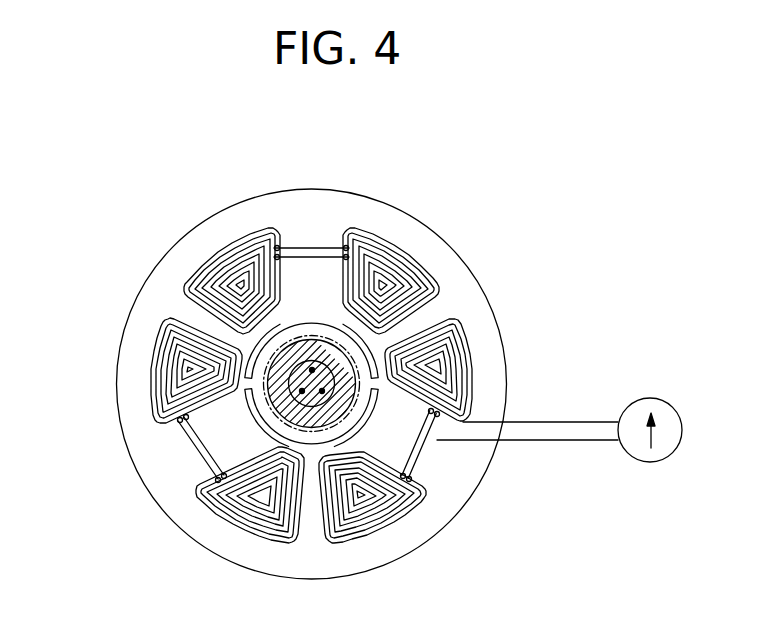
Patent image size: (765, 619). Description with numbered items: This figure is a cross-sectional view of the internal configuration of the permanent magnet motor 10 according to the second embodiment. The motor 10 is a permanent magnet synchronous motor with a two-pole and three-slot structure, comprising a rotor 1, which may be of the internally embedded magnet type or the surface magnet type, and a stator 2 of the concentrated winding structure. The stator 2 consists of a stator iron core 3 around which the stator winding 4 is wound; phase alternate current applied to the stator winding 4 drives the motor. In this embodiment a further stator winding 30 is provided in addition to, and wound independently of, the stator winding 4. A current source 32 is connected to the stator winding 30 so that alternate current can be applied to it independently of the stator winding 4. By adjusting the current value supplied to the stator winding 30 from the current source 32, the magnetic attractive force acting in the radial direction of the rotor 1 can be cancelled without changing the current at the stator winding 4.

The rotor 1 is at (312, 330).
The stator 2 is at (67, 363).
The stator iron core 3 is at (180, 453).
The stator winding 4 is at (167, 381).
The motor 10 is at (572, 221).
The stator winding 30 is at (418, 466).
The current source 32 is at (656, 398).